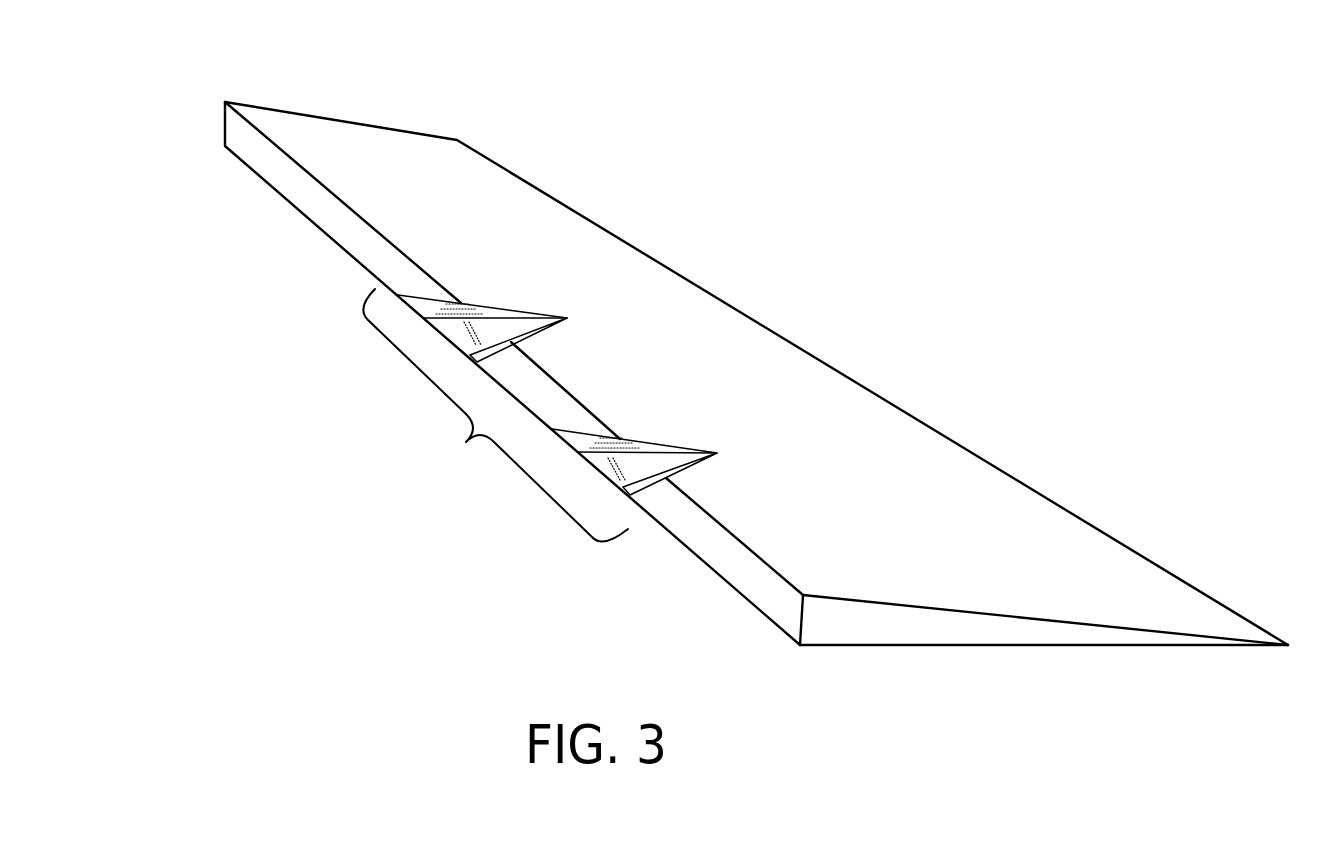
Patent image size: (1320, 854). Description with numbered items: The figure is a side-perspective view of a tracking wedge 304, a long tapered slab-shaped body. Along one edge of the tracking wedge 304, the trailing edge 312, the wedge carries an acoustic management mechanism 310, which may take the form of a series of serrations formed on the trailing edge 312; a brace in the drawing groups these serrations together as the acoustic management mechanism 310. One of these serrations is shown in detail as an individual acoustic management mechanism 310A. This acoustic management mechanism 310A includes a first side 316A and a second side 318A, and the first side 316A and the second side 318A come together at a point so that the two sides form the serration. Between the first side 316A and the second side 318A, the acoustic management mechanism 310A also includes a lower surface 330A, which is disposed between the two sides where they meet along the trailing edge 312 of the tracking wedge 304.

The tracking wedge 304 is at (400, 130).
The trailing edge 312 is at (268, 214).
The acoustic management mechanism 310 is at (540, 379).
The acoustic management mechanism 310A is at (536, 305).
The first side 316A is at (471, 296).
The lower surface 330A is at (563, 319).
The second side 318A is at (536, 339).